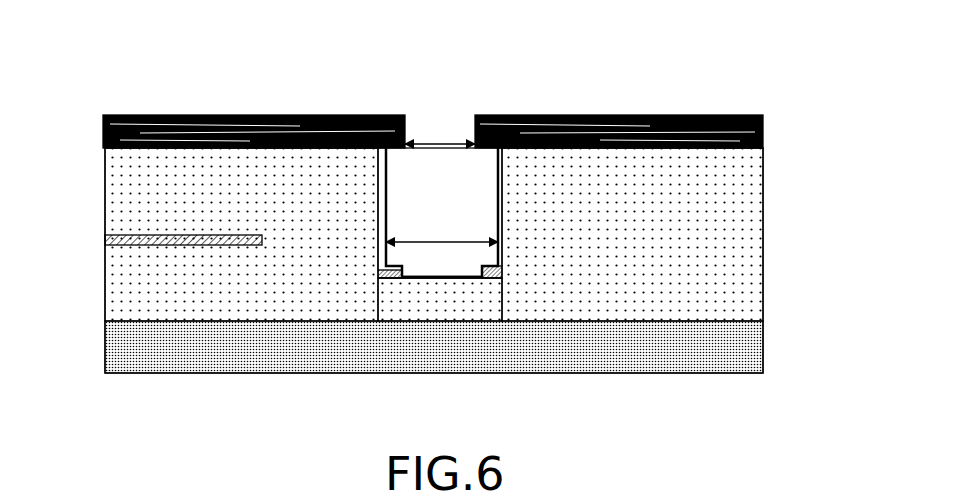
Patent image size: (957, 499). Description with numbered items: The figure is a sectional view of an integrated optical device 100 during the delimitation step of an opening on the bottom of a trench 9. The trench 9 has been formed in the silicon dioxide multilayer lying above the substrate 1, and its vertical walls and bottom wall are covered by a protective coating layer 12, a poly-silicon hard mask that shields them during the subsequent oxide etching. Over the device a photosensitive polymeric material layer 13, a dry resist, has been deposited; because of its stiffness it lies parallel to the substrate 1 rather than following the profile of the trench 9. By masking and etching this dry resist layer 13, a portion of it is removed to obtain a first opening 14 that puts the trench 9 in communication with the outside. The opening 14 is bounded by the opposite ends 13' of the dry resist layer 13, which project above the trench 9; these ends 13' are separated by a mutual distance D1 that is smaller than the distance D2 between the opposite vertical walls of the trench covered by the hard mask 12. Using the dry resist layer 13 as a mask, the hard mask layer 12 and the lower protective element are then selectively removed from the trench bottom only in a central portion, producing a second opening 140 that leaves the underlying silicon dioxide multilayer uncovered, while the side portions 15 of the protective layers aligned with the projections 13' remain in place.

The substrate 1 is at (123, 352).
The trench 9 is at (418, 202).
The protective coating layer 12 is at (135, 115).
The photosensitive polymeric material layer 13 is at (469, 204).
The opposite ends of the dry resist layer 13' is at (424, 67).
The first opening 14 is at (416, 136).
The side portions of the protective layers 15 is at (385, 283).
The integrated optical device 100 is at (213, 460).
The second opening 140 is at (430, 273).
The mutual distance between the resist ends D1 is at (438, 142).
The distance between the opposite vertical walls D2 is at (442, 204).